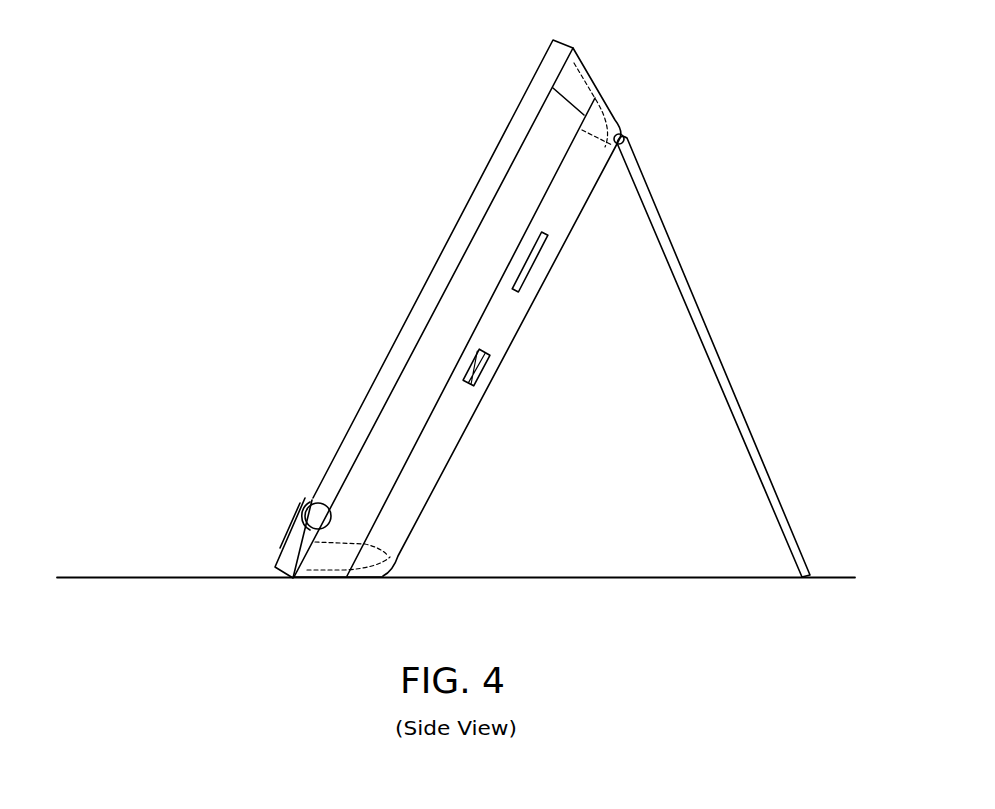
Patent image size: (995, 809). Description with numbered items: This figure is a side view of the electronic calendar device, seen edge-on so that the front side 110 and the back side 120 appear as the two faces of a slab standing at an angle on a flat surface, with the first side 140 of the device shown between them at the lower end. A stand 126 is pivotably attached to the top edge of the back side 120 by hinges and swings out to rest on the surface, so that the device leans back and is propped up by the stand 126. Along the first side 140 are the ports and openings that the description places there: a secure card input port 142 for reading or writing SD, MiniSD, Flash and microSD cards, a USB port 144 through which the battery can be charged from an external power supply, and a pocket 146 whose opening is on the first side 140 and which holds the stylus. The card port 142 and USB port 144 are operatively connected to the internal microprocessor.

The front side 110 is at (402, 322).
The back side 120 is at (447, 462).
The stand 126 is at (687, 285).
The first side 140 is at (402, 407).
The secure card input port 142 is at (517, 275).
The USB port 144 is at (483, 375).
The pocket 146 is at (322, 518).